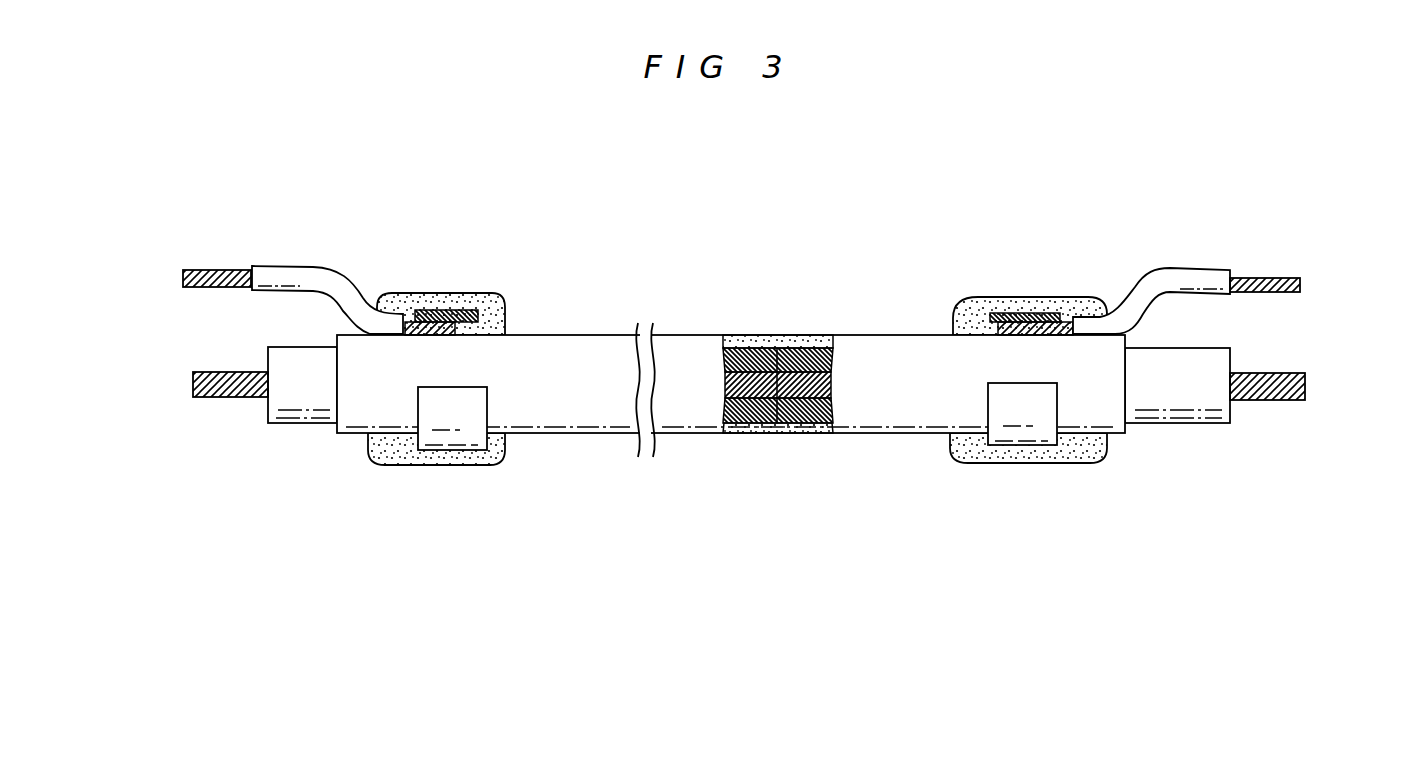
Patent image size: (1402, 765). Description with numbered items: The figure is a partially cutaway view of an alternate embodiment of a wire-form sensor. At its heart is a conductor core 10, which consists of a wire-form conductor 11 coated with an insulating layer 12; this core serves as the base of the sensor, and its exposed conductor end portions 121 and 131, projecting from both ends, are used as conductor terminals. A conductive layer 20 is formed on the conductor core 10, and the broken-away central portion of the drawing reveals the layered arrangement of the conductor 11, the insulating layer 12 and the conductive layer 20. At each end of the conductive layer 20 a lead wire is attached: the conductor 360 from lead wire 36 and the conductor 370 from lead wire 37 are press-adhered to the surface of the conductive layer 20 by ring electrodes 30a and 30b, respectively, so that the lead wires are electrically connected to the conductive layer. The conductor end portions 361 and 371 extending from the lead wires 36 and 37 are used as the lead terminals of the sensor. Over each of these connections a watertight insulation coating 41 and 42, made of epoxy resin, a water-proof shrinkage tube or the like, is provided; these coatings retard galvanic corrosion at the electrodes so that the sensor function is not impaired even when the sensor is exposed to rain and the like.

The conductor core 10 is at (842, 240).
The wire-form conductor 11 is at (777, 362).
The insulating layer 12 is at (750, 360).
The conductive layer 20 is at (772, 437).
The ring electrode 30a is at (1002, 430).
The ring electrode 30b is at (458, 440).
The lead wire 36 is at (1168, 282).
The conductor 360 is at (1042, 317).
The conductor end portion 361 is at (1277, 282).
The lead wire 37 is at (307, 273).
The conductor 370 is at (428, 317).
The conductor end portion 371 is at (197, 268).
The watertight insulation coating 41 is at (977, 317).
The watertight insulation coating 42 is at (380, 458).
The conductor end portion 121 is at (1273, 383).
The conductor end portion 131 is at (217, 370).